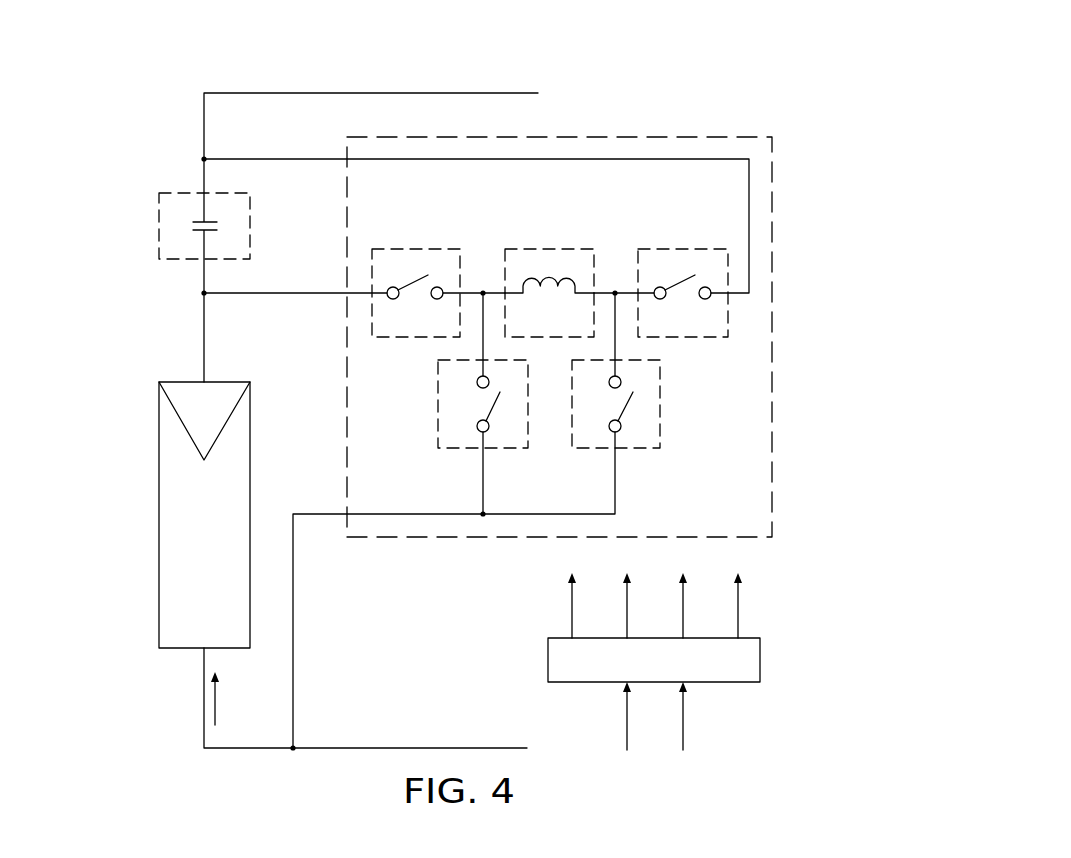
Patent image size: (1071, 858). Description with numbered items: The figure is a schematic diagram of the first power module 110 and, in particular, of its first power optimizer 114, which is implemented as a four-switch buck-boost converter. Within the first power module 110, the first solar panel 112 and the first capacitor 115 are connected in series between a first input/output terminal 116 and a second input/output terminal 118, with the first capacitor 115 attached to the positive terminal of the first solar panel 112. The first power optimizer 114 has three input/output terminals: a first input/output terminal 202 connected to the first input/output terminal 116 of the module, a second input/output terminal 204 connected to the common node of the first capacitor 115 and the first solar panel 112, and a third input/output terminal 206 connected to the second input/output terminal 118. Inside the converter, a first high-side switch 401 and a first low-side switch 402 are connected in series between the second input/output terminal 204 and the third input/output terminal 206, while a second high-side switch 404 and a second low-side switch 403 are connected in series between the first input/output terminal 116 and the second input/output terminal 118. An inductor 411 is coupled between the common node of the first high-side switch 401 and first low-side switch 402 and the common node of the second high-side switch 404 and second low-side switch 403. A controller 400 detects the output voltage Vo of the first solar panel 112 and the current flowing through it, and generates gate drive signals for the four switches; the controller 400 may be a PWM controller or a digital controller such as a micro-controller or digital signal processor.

The first power module 110 is at (727, 60).
The first solar panel 112 is at (226, 531).
The first power optimizer 114 is at (716, 498).
The first capacitor 115 is at (159, 228).
The first input/output terminal 116 is at (373, 93).
The second input/output terminal 118 is at (412, 748).
The first input/output terminal 202 is at (287, 159).
The second input/output terminal 204 is at (313, 293).
The third input/output terminal 206 is at (321, 514).
The controller 400 is at (760, 658).
The first high-side switch 401 is at (402, 249).
The first low-side switch 402 is at (438, 392).
The second low-side switch 403 is at (660, 392).
The second high-side switch 404 is at (693, 249).
The inductor 411 is at (563, 249).